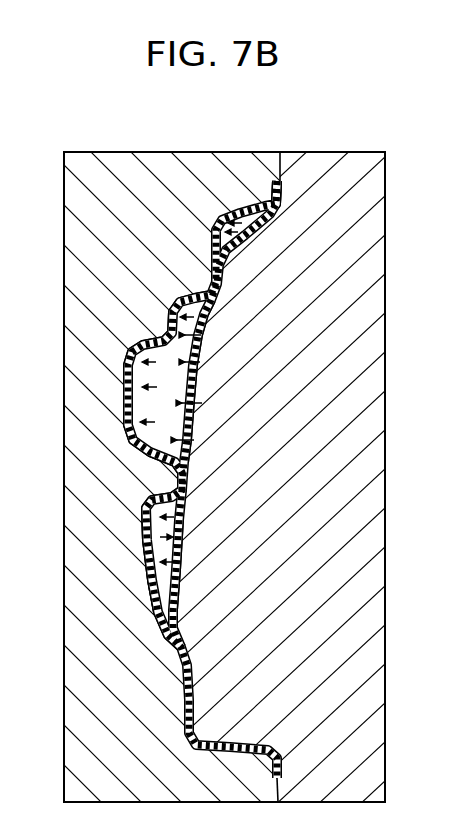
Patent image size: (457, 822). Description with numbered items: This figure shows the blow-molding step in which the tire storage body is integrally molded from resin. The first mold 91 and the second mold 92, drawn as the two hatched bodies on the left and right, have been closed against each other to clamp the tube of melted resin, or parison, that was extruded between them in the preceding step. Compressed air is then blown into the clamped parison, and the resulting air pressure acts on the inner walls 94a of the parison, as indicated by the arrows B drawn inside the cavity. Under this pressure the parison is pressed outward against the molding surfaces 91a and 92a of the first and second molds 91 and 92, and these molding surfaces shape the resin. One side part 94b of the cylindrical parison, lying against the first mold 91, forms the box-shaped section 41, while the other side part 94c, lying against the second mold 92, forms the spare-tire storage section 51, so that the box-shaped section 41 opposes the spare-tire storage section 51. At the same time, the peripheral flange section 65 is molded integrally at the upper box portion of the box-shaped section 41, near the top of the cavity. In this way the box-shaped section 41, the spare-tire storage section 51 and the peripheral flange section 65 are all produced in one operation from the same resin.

The first mold 91 is at (72, 352).
The second mold 92 is at (372, 398).
The molding surface 91a is at (158, 548).
The molding surface 92a is at (183, 593).
The inner walls 94a is at (137, 373).
The one side part 94b is at (148, 595).
The other side part 94c is at (192, 427).
The spare-tire storage section 51 is at (198, 477).
The peripheral flange section 65 is at (278, 195).
The box-shaped section 41 is at (146, 588).
The arrows indicating air pressure B is at (137, 432).